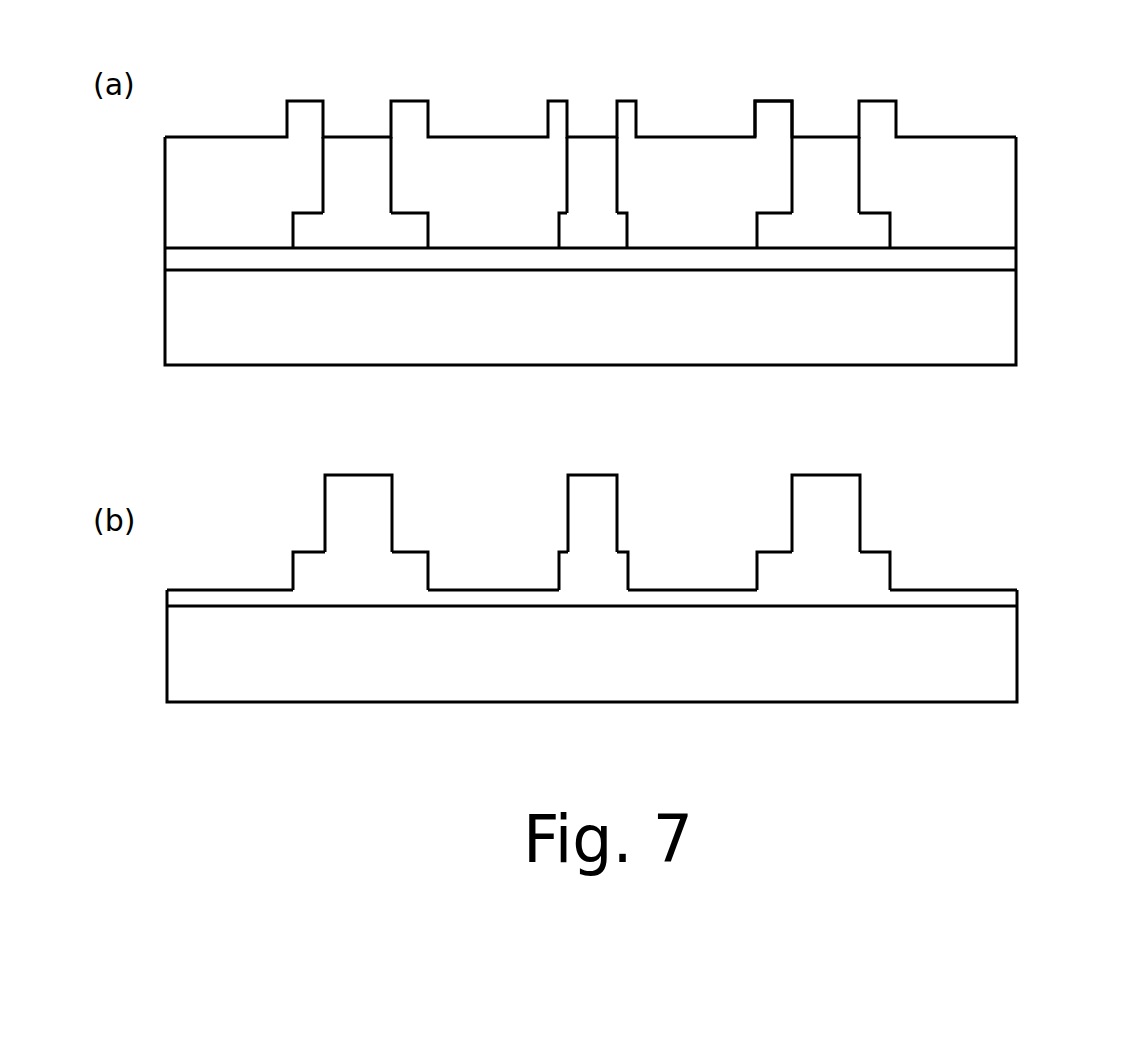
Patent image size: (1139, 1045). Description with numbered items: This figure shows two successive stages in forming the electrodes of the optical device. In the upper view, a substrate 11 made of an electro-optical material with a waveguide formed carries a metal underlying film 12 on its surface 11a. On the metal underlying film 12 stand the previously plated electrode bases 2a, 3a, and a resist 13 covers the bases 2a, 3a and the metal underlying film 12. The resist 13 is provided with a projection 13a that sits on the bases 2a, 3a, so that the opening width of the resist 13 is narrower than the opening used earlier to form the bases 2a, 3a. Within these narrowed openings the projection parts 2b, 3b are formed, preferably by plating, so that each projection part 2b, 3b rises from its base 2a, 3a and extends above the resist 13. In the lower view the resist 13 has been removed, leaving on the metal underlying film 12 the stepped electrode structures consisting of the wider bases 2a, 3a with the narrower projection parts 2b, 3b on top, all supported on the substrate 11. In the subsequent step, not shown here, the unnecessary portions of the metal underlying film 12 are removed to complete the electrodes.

The electrode base 2a is at (418, 232).
The projection part 2b is at (355, 150).
The electrode base 3a is at (622, 230).
The projection part 3b is at (588, 150).
The substrate 11 is at (1000, 333).
The surface of the substrate 11a is at (998, 272).
The metal underlying film 12 is at (975, 258).
The resist 13 is at (686, 150).
The projection 13a is at (773, 115).